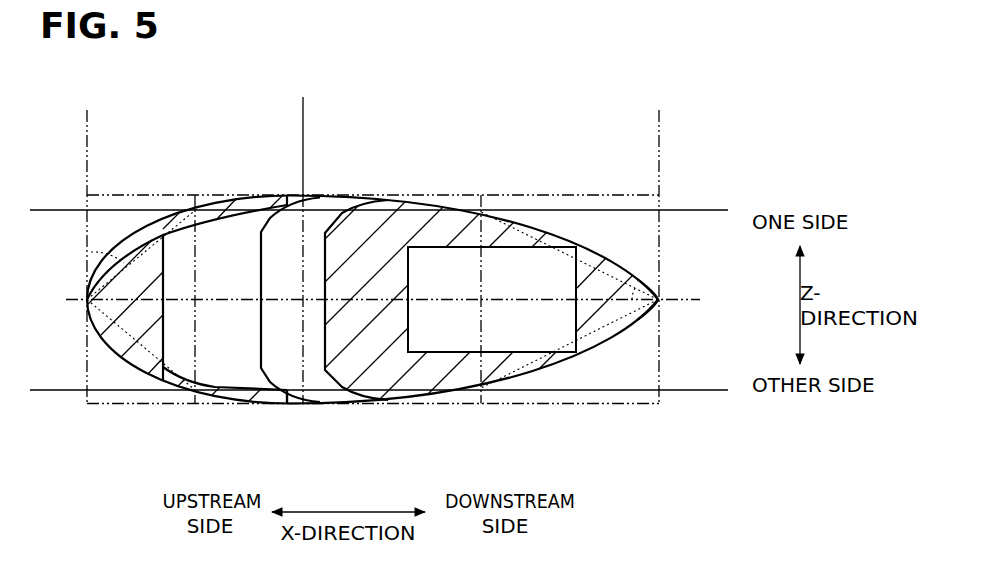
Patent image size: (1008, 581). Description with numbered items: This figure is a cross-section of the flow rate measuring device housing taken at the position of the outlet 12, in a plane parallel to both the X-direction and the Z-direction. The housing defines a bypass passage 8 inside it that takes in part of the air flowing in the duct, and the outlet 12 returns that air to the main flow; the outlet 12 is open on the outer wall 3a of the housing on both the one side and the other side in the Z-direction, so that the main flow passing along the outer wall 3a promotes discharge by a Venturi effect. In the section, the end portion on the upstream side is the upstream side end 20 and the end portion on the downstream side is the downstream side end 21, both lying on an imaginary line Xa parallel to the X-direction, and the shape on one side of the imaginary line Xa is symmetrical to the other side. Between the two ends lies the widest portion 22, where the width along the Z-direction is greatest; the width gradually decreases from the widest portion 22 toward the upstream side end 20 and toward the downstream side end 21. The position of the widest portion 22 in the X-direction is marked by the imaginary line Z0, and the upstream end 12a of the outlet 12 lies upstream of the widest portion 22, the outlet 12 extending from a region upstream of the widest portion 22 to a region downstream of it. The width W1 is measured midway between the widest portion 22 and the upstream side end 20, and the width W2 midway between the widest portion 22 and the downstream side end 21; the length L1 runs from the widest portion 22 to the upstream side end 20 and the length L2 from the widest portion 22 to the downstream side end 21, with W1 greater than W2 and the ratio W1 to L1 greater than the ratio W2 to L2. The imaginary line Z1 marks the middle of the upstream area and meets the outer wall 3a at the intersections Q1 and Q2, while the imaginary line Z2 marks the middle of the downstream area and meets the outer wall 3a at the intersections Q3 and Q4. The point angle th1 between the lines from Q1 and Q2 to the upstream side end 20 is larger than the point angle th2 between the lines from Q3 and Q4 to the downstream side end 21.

The outer wall 3a is at (418, 200).
The bypass passage 8 is at (185, 242).
The outlet 12 is at (318, 405).
The upstream end of the outlet 12a is at (287, 404).
The upstream side end 20 is at (86, 298).
The downstream side end 21 is at (660, 299).
The widest portion 22 is at (320, 197).
The intersection Q1 is at (196, 211).
The intersection Q2 is at (198, 393).
The intersection Q3 is at (483, 211).
The intersection Q4 is at (483, 390).
The imaginary line Z0 is at (298, 235).
The imaginary line Z1 is at (179, 395).
The imaginary line Z2 is at (478, 372).
The point angle th1 is at (99, 254).
The point angle th2 is at (606, 258).
The imaginary line Xa is at (82, 302).
The length L1 is at (87, 105).
The length L2 is at (303, 105).
The width W1 is at (35, 210).
The width W2 is at (722, 210).